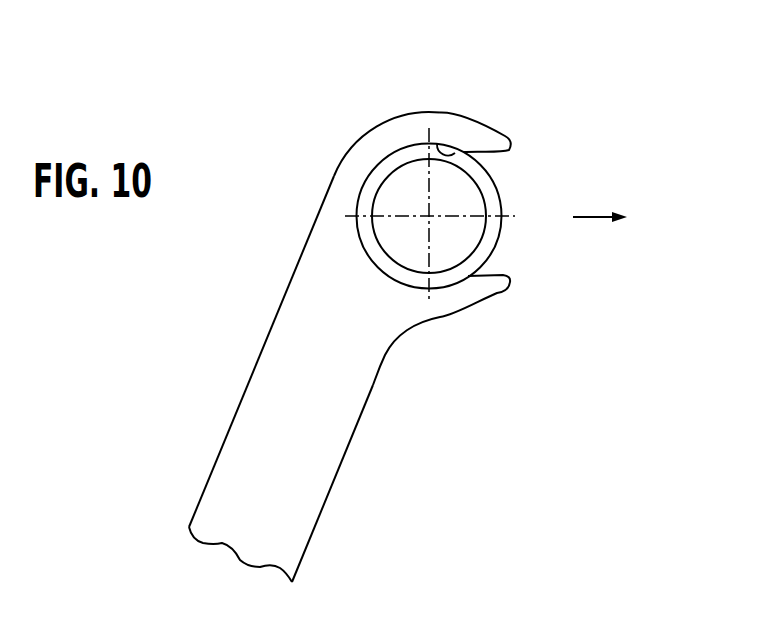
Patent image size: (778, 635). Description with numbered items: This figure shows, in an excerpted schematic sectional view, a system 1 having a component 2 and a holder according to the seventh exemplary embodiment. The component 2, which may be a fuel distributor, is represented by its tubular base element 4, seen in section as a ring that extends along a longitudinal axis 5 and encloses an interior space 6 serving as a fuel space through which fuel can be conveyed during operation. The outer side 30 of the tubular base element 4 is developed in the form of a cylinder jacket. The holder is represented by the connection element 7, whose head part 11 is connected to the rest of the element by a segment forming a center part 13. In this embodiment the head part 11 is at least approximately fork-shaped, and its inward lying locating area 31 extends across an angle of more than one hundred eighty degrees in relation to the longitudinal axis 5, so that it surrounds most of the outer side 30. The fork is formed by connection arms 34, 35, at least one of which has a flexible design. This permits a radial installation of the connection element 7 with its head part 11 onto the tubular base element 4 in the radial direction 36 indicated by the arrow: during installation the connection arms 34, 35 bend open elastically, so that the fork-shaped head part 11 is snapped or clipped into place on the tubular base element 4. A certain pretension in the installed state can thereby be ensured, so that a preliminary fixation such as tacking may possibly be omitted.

The system 1 is at (619, 78).
The component 2 is at (360, 318).
The tubular base element 4 is at (387, 167).
The longitudinal axis 5 is at (429, 216).
The interior space 6 is at (402, 195).
The connection element 7 is at (332, 308).
The head part 11 is at (412, 128).
The center part 13 is at (278, 427).
The outer side 30 is at (498, 239).
The locating area 31 is at (465, 150).
The connection arm 34 is at (477, 138).
The connection arm 35 is at (462, 297).
The radial direction 36 is at (597, 215).